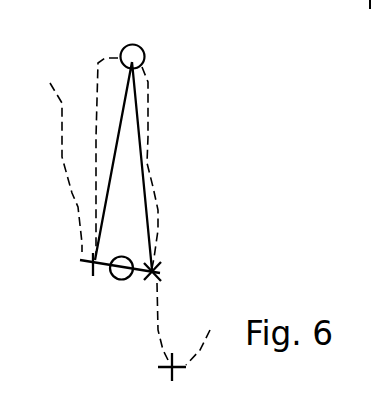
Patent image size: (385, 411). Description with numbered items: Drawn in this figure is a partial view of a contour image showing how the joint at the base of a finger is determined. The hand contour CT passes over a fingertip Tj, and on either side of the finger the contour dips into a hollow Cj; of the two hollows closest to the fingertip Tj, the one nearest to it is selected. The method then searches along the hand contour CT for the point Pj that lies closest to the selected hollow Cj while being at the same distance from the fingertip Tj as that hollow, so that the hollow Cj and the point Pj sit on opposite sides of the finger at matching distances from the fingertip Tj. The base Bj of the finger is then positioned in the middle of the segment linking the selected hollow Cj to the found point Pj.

The fingertip Tj is at (135, 45).
The hand contour CT is at (148, 108).
The point Pj is at (161, 272).
The base of the finger Bj is at (121, 280).
The hollow Cj is at (174, 362).